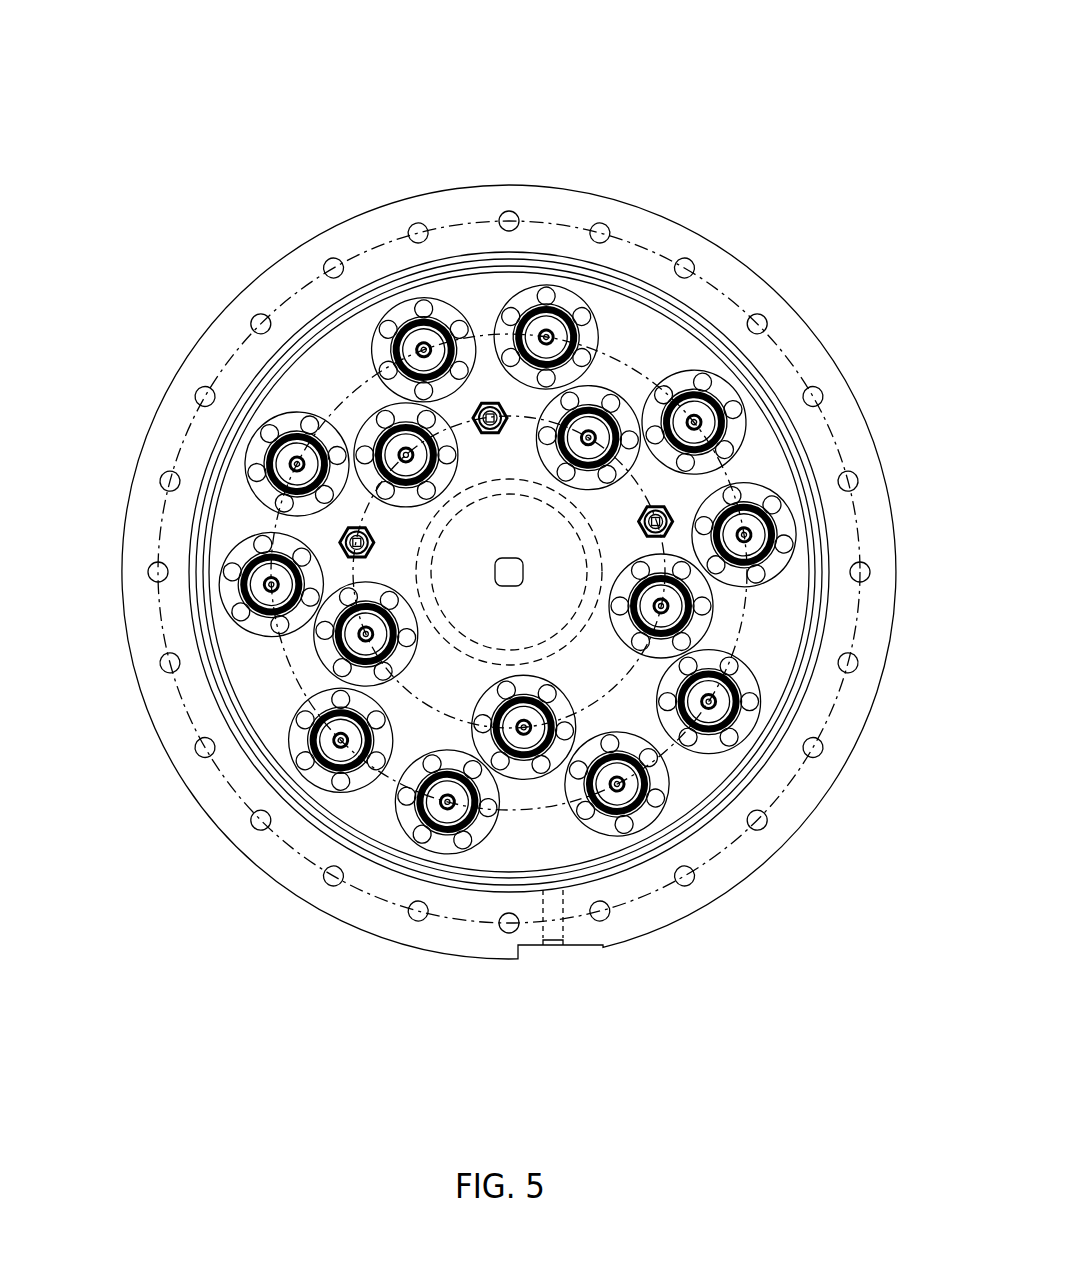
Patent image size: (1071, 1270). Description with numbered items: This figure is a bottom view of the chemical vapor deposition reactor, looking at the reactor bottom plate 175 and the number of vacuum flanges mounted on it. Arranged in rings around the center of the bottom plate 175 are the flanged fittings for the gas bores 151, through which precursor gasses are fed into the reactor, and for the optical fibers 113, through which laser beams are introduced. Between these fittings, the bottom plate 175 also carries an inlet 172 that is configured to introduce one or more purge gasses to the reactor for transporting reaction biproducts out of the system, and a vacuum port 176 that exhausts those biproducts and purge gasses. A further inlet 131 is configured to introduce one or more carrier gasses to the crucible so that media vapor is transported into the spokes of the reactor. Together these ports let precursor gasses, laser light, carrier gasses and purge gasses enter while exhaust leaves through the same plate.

The reactor bottom plate 175 is at (187, 103).
The vacuum port 176 is at (490, 385).
The gas bores 151 is at (405, 290).
The optical fibers 113 is at (367, 413).
The inlet 131 is at (678, 510).
The inlet 172 is at (337, 535).